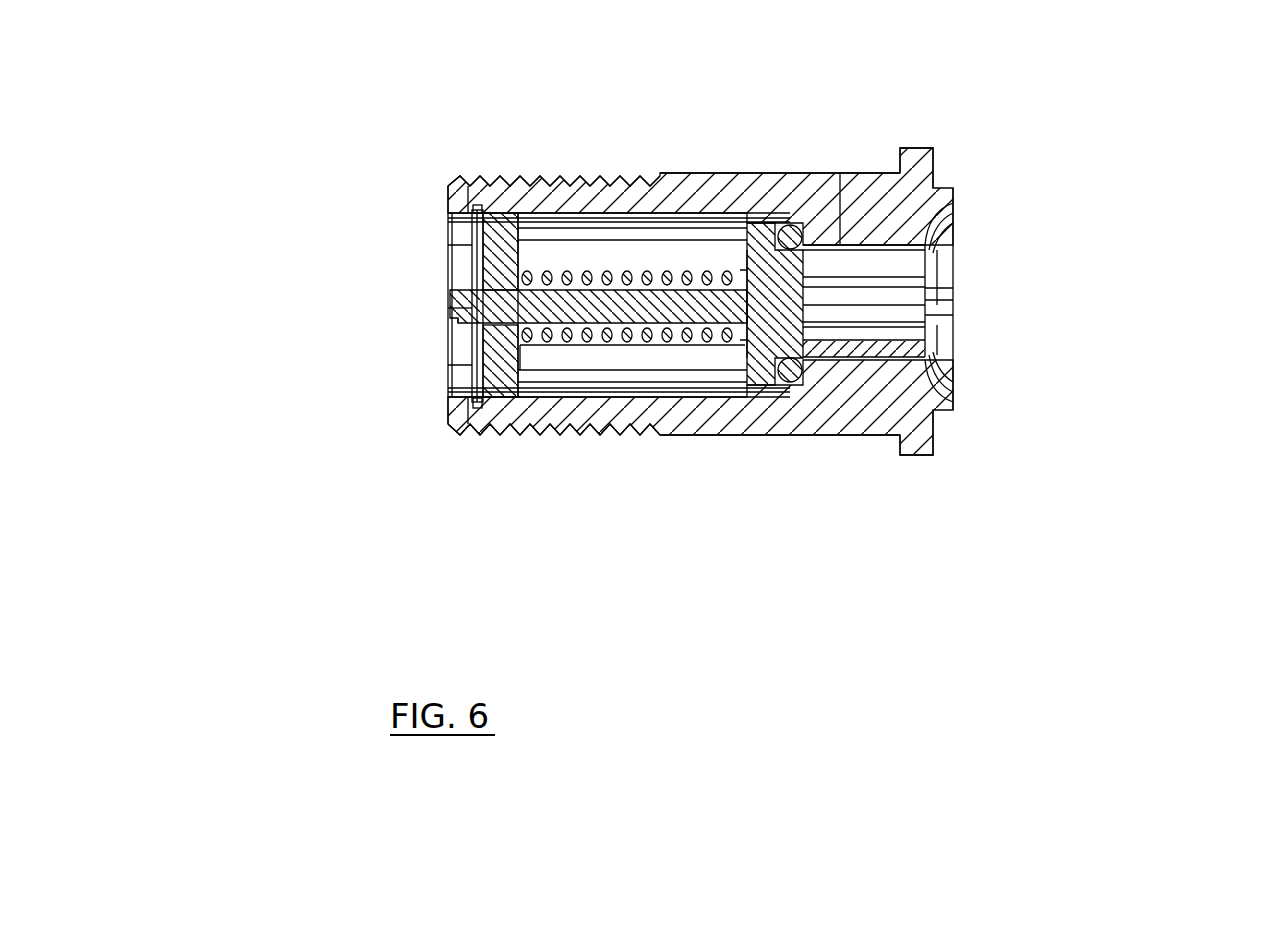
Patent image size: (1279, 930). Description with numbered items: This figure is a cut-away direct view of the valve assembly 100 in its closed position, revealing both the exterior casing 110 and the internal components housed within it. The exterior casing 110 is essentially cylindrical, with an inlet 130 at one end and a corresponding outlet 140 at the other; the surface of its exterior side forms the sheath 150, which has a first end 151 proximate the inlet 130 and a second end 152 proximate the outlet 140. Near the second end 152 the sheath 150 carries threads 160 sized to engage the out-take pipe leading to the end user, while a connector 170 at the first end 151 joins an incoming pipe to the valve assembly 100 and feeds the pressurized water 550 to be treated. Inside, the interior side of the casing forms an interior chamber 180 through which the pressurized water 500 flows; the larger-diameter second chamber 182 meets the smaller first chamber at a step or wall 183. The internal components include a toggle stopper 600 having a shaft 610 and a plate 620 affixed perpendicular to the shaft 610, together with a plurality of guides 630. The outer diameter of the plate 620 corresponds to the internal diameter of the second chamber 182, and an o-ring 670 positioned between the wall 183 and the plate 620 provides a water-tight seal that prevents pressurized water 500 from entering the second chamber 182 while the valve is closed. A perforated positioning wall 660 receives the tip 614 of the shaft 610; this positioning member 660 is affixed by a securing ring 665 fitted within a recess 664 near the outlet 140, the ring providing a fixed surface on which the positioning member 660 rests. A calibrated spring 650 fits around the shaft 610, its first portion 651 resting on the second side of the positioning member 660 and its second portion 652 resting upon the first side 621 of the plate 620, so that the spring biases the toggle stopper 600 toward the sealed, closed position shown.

The valve assembly 100 is at (763, 106).
The exterior casing 110 is at (722, 438).
The inlet 130 is at (955, 215).
The outlet 140 is at (455, 255).
The sheath 150 is at (660, 436).
The first end 151 is at (893, 437).
The second end 152 is at (455, 172).
The threads 160 is at (503, 438).
The connector 170 is at (937, 365).
The interior chamber 180 is at (598, 334).
The second chamber 182 is at (575, 365).
The wall 183 is at (855, 212).
The fluid 500 is at (355, 311).
The pressurized water 550 is at (318, 343).
The toggle stopper 600 is at (748, 318).
The shaft 610 is at (605, 275).
The tip 614 is at (450, 312).
The plate 620 is at (765, 250).
The first side 621 is at (748, 268).
The guides 630 is at (925, 265).
The calibrated spring 650 is at (680, 268).
The first portion 651 is at (522, 318).
The second portion 652 is at (735, 322).
The perforated positioning wall 660 is at (490, 360).
The recess 664 is at (476, 215).
The securing ring 665 is at (447, 420).
The o-ring 670 is at (795, 383).